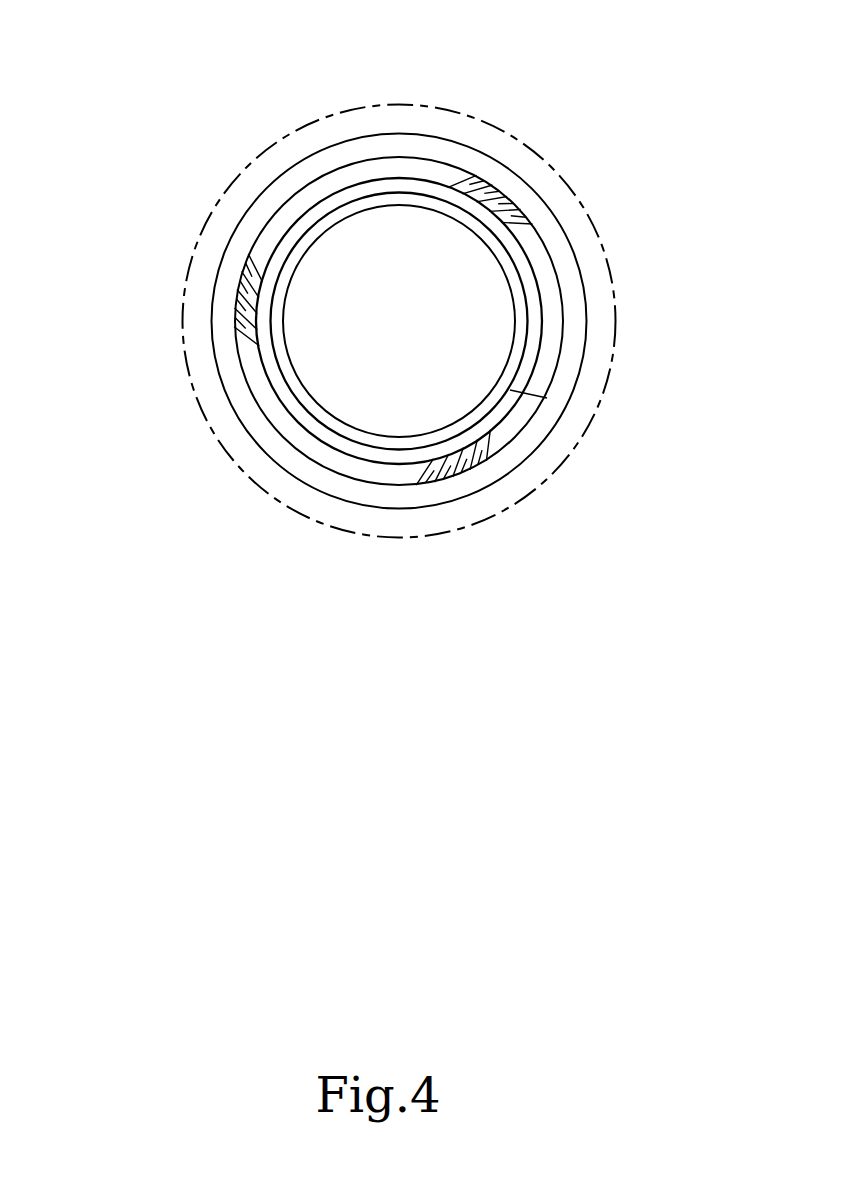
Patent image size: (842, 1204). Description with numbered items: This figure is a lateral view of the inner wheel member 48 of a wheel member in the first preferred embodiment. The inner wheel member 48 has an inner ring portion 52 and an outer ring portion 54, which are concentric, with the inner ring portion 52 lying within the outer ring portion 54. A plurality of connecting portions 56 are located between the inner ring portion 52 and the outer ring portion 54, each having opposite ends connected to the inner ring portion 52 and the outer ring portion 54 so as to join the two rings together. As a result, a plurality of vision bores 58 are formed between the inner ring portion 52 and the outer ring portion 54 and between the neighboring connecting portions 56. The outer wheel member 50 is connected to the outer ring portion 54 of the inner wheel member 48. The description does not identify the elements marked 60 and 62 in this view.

The inner wheel member 48 is at (237, 427).
The outer wheel member 50 is at (357, 108).
The inner ring portion 52 is at (313, 210).
The outer ring portion 54 is at (222, 277).
The connecting portions 56 is at (500, 198).
The vision bores 58 is at (402, 170).
The inner ring 60 is at (540, 293).
The slit 62 is at (510, 390).